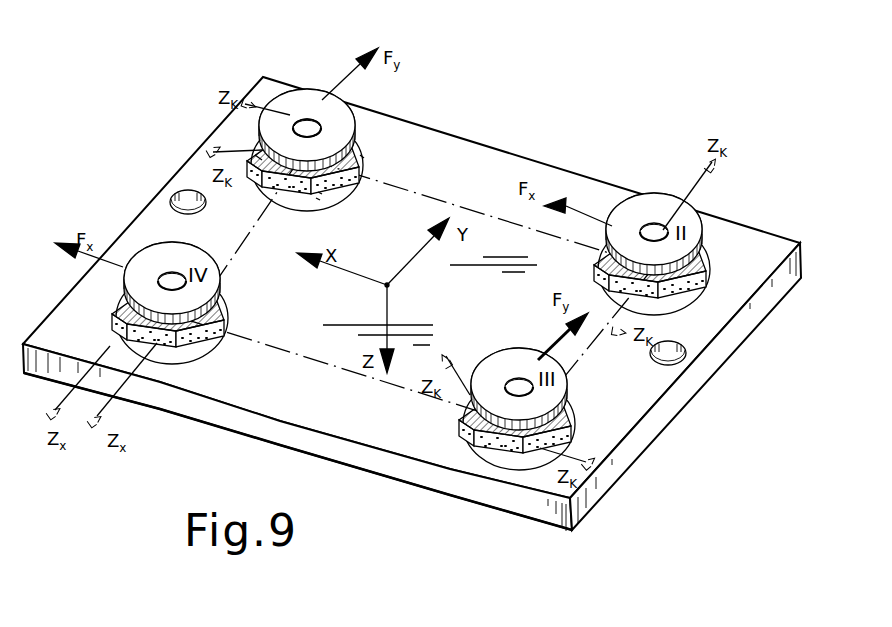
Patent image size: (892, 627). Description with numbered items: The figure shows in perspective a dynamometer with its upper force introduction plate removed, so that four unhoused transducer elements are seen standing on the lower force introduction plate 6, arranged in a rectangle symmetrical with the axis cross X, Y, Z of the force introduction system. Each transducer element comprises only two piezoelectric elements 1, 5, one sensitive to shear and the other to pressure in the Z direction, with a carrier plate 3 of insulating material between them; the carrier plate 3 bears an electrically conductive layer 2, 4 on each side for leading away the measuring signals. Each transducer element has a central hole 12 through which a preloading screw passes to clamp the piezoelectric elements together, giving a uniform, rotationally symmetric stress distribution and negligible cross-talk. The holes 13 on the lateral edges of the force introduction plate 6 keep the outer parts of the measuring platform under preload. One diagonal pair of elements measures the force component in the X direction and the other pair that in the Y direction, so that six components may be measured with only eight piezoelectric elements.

The piezoelectric element 1 is at (281, 100).
The electrically conductive layer 2 is at (255, 157).
The carrier plate 3 is at (360, 156).
The electrically conductive layer 4 is at (318, 196).
The piezoelectric element 5 is at (320, 192).
The force introduction plate 6 is at (488, 158).
The central hole 12 is at (305, 118).
The holes 13 is at (676, 358).